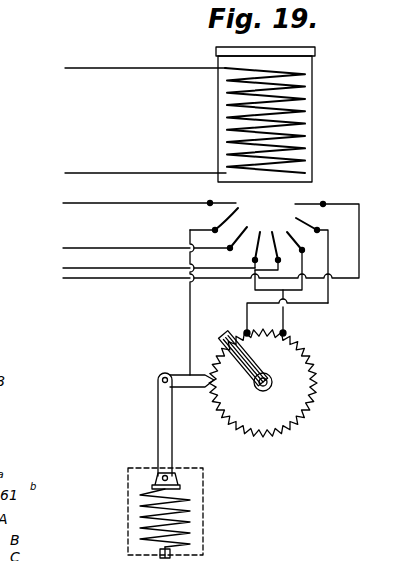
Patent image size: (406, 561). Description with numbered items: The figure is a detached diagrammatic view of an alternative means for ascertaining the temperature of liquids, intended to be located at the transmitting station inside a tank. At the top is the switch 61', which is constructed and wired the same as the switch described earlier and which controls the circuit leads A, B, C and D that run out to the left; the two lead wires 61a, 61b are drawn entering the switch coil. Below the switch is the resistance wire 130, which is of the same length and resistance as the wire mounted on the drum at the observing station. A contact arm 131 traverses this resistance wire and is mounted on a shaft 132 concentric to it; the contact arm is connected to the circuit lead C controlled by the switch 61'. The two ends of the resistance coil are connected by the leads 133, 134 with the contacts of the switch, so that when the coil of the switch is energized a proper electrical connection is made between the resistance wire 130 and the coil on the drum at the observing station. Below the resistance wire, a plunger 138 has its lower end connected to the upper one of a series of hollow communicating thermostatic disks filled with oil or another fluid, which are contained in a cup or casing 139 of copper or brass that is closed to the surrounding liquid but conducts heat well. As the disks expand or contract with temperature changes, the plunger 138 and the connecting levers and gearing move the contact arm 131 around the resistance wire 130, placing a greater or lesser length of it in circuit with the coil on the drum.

The upper lead wire of magnet coil 61a is at (155, 60).
The switch 61' is at (237, 114).
The lower lead wire of magnet coil 61b is at (100, 172).
The circuit lead A is at (168, 280).
The circuit lead B is at (83, 267).
The circuit lead C is at (160, 203).
The circuit lead D is at (125, 247).
The resistance wire 130 is at (319, 383).
The contact arm 131 is at (247, 356).
The shaft 132 is at (263, 391).
The lead 133 is at (246, 332).
The lead 134 is at (285, 332).
The plunger 138 is at (168, 427).
The cup or casing 139 is at (142, 505).